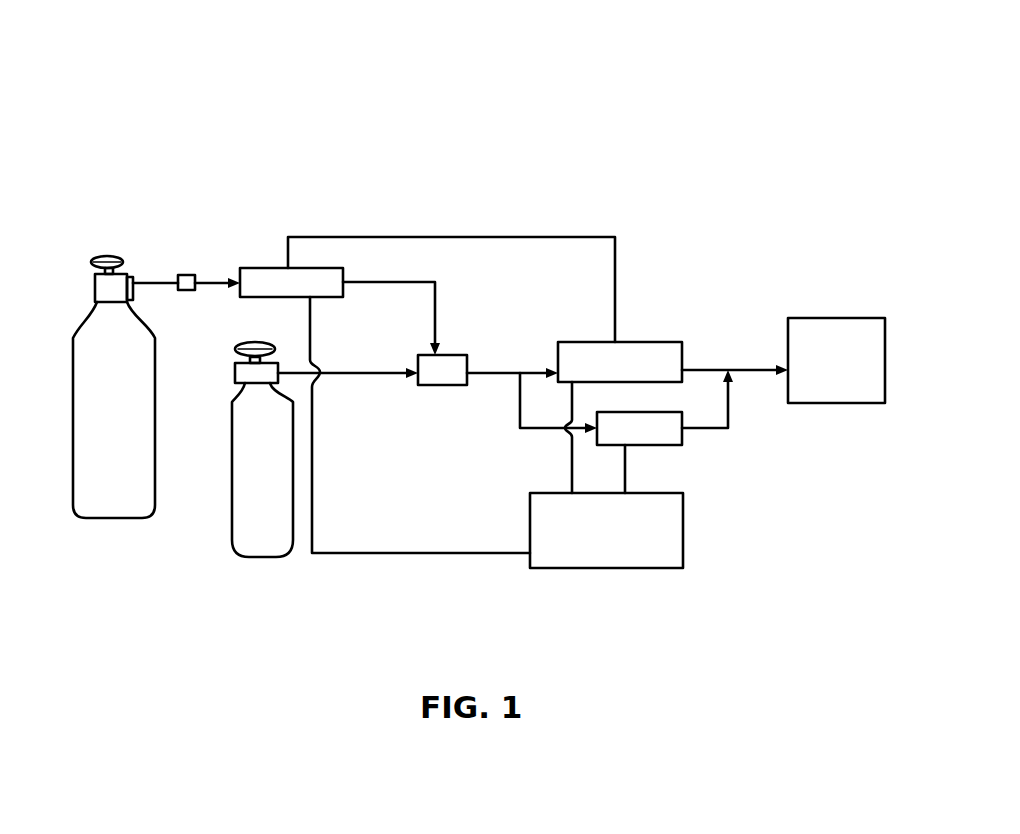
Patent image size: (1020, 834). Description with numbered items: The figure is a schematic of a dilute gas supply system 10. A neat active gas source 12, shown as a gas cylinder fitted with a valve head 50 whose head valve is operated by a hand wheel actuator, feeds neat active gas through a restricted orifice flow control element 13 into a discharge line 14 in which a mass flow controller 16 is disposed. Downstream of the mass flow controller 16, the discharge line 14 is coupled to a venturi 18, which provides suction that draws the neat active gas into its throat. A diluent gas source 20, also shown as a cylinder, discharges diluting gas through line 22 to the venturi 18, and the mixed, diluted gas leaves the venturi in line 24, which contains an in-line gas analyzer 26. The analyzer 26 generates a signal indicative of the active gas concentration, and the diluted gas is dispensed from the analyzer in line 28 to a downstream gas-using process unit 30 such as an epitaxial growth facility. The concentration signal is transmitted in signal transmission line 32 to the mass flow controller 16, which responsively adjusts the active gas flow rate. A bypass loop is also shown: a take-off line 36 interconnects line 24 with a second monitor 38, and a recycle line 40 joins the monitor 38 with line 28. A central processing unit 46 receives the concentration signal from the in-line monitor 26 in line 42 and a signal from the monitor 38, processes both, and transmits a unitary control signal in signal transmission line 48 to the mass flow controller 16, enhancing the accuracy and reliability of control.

The dilute gas supply system 10 is at (632, 128).
The neat active gas source 12 is at (95, 500).
The restricted orifice flow control element 13 is at (188, 291).
The discharge line 14 is at (158, 280).
The mass flow controller 16 is at (267, 300).
The venturi 18 is at (447, 373).
The diluent gas source 20 is at (247, 537).
The line 22 is at (338, 377).
The line 24 is at (488, 372).
The in-line gas analyzer 26 is at (640, 342).
The line 28 is at (748, 368).
The gas-using process unit 30 is at (813, 398).
The signal transmission line 32 is at (438, 237).
The take-off line 36 is at (517, 410).
The monitor 38 is at (647, 437).
The recycle line 40 is at (707, 428).
The line 42 is at (573, 405).
The central processing unit (CPU) 46 is at (613, 568).
The signal transmission line 48 is at (405, 553).
The valve head 50 is at (105, 285).